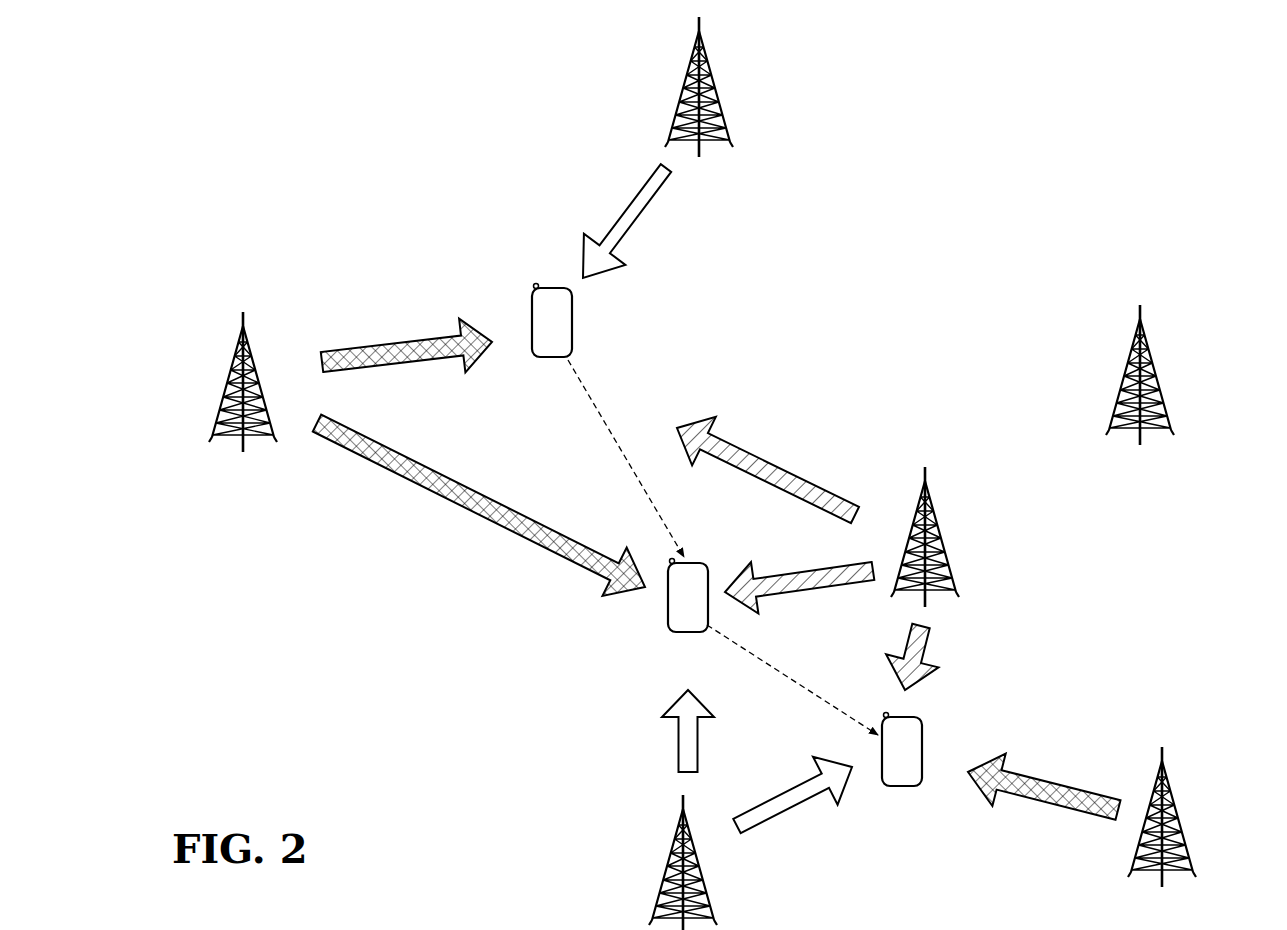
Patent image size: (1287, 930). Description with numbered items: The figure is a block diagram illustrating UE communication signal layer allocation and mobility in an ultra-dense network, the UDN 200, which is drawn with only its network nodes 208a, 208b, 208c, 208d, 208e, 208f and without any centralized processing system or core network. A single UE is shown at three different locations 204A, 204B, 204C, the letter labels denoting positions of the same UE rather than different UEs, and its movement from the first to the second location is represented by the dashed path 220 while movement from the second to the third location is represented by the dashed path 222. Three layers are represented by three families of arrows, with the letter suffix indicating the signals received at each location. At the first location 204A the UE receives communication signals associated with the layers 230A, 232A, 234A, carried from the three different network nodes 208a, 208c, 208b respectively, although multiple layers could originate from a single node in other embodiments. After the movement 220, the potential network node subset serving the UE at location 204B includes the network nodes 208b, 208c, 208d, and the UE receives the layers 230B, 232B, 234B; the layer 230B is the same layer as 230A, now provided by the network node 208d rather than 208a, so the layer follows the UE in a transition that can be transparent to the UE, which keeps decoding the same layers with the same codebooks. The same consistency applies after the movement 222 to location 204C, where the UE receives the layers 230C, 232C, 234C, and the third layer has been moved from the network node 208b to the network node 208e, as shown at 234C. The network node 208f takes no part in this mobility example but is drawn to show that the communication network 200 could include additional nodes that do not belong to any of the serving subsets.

The UDN 200 is at (235, 100).
The UE location 204A is at (572, 322).
The UE location 204B is at (690, 633).
The UE location 204C is at (905, 786).
The network node 208a is at (684, 83).
The network node 208b is at (229, 380).
The network node 208c is at (941, 537).
The network node 208d is at (667, 865).
The network node 208e is at (1178, 817).
The network node 208f is at (1158, 377).
The movement of the UE 220 is at (612, 440).
The movement of the UE 222 is at (802, 689).
The layer 230A is at (632, 204).
The layer 230B is at (678, 745).
The layer 230C is at (779, 812).
The layer 232A is at (789, 474).
The layer 232B is at (806, 590).
The layer 232C is at (923, 644).
The layer 234A is at (403, 349).
The layer 234B is at (442, 493).
The layer 234C is at (1055, 785).